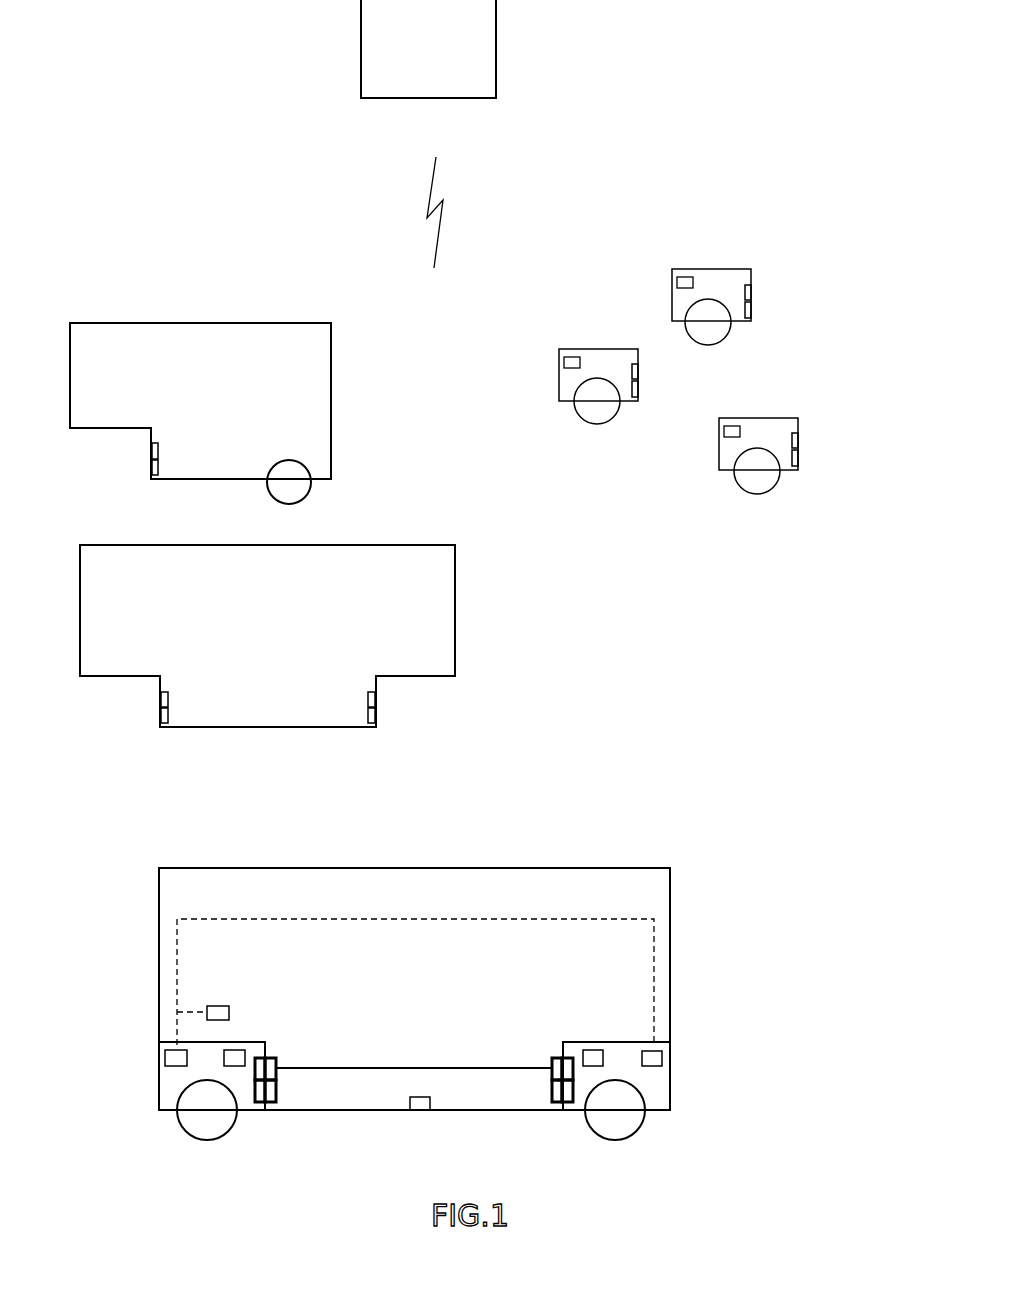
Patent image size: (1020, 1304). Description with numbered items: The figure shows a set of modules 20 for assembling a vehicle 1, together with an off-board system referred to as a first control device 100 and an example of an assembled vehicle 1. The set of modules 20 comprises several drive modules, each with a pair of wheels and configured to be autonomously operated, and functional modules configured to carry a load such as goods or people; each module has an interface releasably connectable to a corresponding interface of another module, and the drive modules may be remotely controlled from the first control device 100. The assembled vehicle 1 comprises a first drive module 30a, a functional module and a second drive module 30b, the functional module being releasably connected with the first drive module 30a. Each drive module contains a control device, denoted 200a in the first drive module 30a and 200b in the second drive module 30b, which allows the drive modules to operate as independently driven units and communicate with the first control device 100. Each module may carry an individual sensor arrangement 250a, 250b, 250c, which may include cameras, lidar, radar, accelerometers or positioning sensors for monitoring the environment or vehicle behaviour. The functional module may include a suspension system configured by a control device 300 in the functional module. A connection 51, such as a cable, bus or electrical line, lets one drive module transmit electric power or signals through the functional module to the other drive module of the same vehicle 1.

The vehicle 1 is at (418, 1006).
The set of modules 20 is at (235, 356).
The first drive module 30a is at (203, 1115).
The second drive module 30b is at (651, 1104).
The connection 51 is at (414, 1087).
The first control device 100 is at (428, 49).
The control device of first drive module 200a is at (159, 1057).
The control device of second drive module 200b is at (663, 1058).
The sensor arrangement 250a is at (257, 1044).
The sensor arrangement 250b is at (577, 1047).
The sensor arrangement 250c is at (406, 1111).
The control device 300 is at (232, 1011).